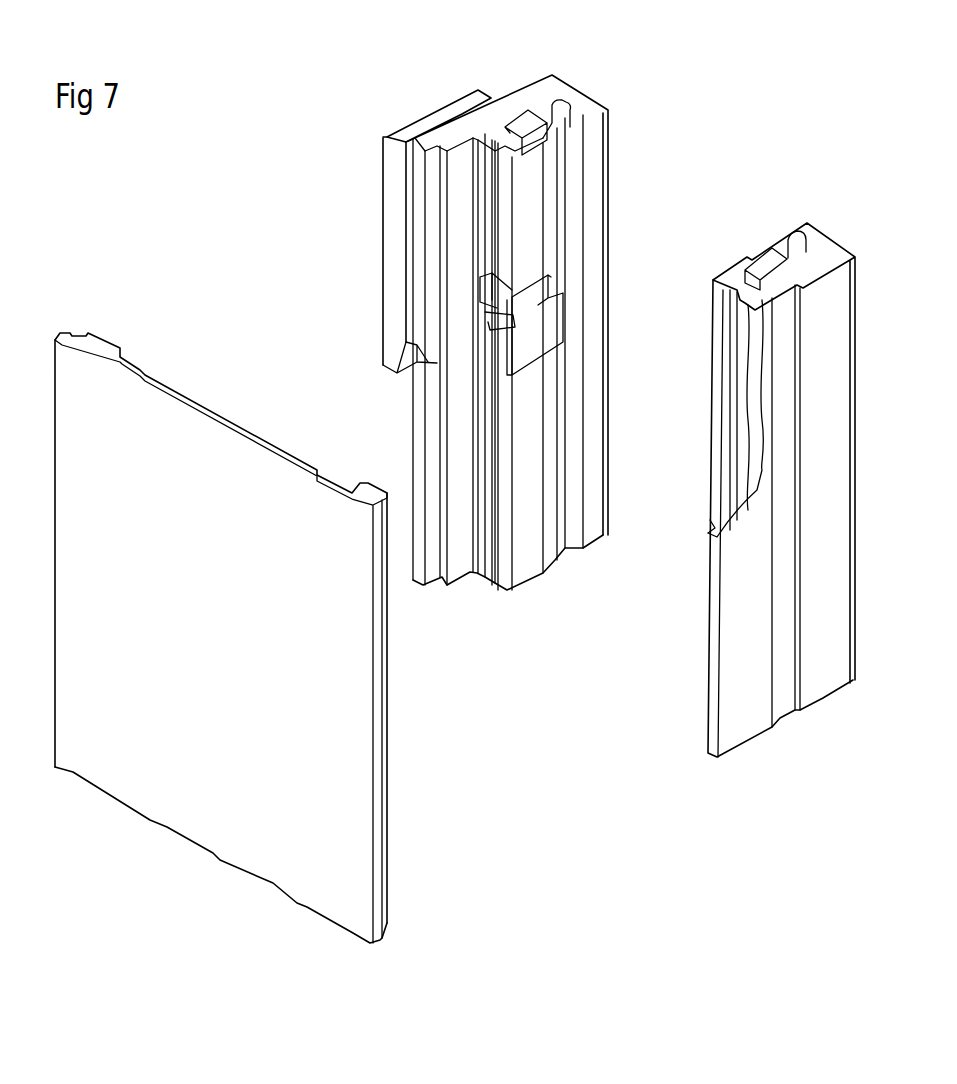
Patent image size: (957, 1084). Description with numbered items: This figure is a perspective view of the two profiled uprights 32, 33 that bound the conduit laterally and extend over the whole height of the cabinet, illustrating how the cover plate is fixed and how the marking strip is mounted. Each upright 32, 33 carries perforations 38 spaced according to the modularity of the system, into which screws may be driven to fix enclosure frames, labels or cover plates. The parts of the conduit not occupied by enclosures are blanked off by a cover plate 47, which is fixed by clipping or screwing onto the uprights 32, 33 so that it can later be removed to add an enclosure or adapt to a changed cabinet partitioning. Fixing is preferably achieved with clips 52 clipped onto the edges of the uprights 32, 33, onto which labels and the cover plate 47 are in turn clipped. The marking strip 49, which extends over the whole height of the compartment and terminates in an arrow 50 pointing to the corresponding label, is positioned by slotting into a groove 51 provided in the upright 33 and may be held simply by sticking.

The profiled upright 32 is at (723, 747).
The profiled upright 33 is at (600, 226).
The perforation 38 is at (713, 280).
The cover plate 47 is at (152, 442).
The strip 49 is at (460, 103).
The arrow 50 is at (417, 362).
The groove 51 is at (495, 103).
The clip 52 is at (550, 338).